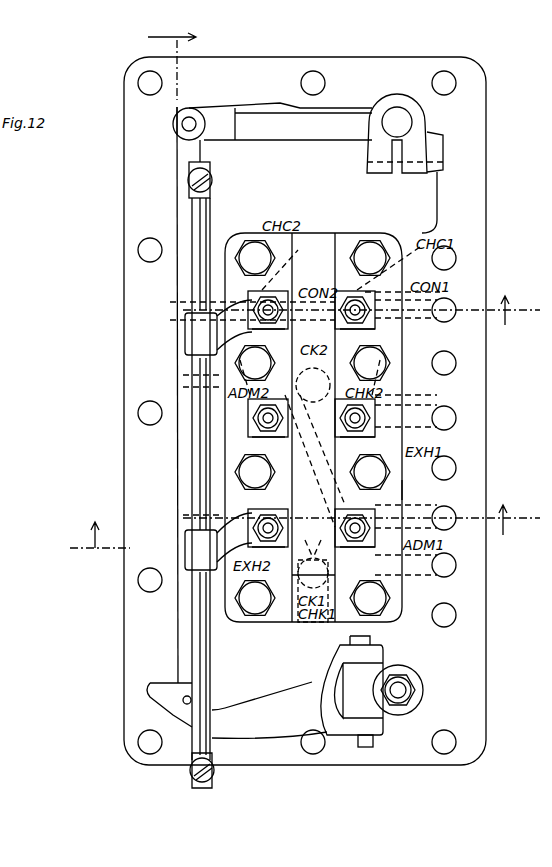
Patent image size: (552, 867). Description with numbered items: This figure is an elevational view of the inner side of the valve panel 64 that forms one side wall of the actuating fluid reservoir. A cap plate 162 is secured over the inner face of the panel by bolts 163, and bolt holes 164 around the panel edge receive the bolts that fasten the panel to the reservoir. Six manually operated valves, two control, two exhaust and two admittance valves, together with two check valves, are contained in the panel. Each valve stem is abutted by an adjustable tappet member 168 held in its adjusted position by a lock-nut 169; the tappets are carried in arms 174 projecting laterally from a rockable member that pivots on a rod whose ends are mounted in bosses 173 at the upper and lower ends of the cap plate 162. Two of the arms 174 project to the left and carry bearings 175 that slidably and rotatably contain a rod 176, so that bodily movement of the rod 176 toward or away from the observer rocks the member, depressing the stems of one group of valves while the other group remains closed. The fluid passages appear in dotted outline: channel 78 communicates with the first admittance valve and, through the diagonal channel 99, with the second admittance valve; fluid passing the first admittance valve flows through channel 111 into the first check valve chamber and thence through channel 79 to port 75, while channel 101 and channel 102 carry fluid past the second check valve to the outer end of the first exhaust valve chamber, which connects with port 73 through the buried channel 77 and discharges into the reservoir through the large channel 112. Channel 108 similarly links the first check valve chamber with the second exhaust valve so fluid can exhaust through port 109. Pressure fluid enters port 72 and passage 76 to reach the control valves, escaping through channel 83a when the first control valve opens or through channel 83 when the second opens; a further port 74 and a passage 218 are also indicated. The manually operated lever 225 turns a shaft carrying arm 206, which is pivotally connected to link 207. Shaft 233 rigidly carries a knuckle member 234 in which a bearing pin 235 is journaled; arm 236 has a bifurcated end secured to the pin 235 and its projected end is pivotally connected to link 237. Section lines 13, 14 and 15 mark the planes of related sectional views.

The section line 13 is at (196, 33).
The section line 14 is at (302, 531).
The section line 15 is at (540, 318).
The valve panel 64 is at (331, 396).
The port 72 is at (452, 318).
The port 73 is at (456, 418).
The passage 74 is at (452, 512).
The port 75 is at (452, 568).
The passage 76 is at (405, 320).
The buried channel 77 is at (430, 430).
The channel 78 is at (435, 530).
The channel 79 is at (405, 577).
The channel 83 is at (185, 308).
The channel 83a is at (440, 293).
The diagonal channel 99 is at (315, 498).
The channel 101 is at (313, 389).
The channel 102 is at (321, 450).
The channel 108 is at (312, 548).
The port 109 is at (190, 517).
The channel 111 is at (313, 543).
The discharge channel 112 is at (400, 395).
The cap plate 162 is at (402, 497).
The bolts 163 is at (255, 258).
The bolt holes 164 is at (444, 76).
The tappet members 168 is at (253, 317).
The lock-nuts 169 is at (278, 294).
The bosses 173 is at (312, 238).
The arms 174 is at (288, 329).
The bearings 175 is at (185, 334).
The rod 176 is at (190, 498).
The arm 206 is at (322, 115).
The link 207 is at (182, 164).
The passage 218 is at (210, 382).
The lever 225 is at (410, 130).
The shaft 233 is at (405, 690).
The knuckle member 234 is at (372, 670).
The bearing pin 235 is at (366, 747).
The arm 236 is at (278, 700).
The link 237 is at (186, 657).